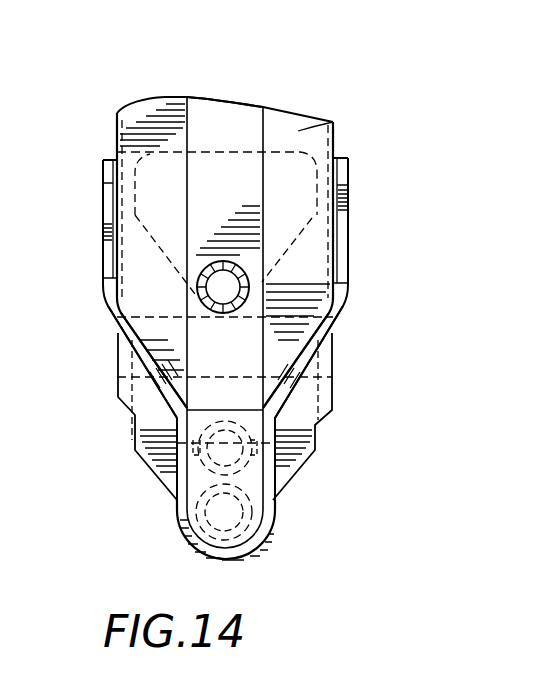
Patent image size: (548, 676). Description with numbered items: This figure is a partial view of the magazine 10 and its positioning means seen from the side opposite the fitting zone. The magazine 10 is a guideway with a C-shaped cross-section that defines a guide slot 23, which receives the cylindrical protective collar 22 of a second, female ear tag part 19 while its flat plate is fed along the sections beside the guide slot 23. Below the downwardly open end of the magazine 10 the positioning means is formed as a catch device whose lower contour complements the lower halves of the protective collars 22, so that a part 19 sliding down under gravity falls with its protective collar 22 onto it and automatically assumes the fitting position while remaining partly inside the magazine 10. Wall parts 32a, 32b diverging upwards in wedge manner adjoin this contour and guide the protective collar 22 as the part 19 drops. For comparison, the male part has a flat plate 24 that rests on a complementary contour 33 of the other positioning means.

The magazine 10 is at (333, 122).
The guide slot 23 is at (218, 128).
The second part 19 is at (150, 446).
The protective collar 22 is at (249, 283).
The flat plate 24 is at (276, 443).
The wall part 32a is at (126, 357).
The wall part 32b is at (305, 385).
The contour 33 is at (262, 555).